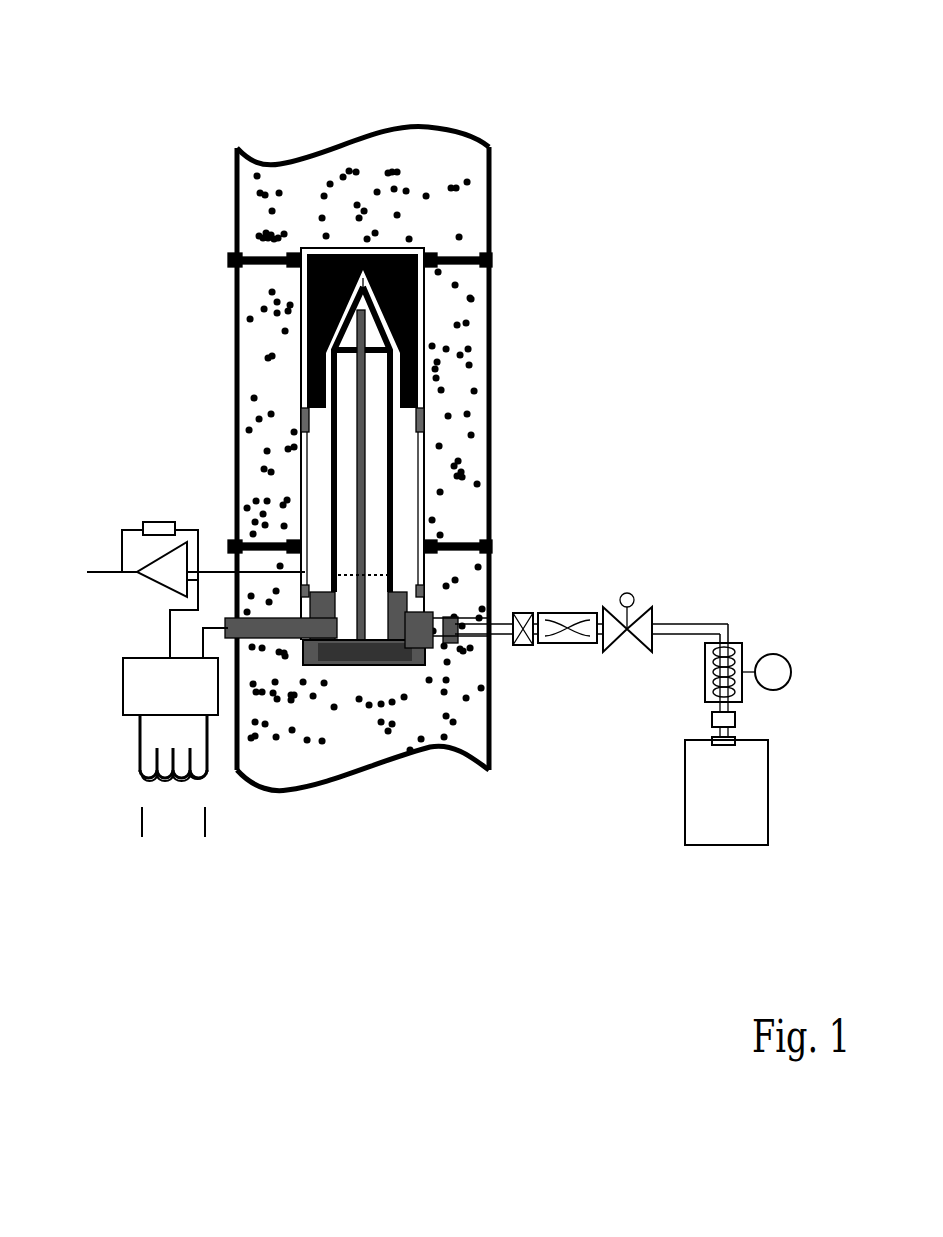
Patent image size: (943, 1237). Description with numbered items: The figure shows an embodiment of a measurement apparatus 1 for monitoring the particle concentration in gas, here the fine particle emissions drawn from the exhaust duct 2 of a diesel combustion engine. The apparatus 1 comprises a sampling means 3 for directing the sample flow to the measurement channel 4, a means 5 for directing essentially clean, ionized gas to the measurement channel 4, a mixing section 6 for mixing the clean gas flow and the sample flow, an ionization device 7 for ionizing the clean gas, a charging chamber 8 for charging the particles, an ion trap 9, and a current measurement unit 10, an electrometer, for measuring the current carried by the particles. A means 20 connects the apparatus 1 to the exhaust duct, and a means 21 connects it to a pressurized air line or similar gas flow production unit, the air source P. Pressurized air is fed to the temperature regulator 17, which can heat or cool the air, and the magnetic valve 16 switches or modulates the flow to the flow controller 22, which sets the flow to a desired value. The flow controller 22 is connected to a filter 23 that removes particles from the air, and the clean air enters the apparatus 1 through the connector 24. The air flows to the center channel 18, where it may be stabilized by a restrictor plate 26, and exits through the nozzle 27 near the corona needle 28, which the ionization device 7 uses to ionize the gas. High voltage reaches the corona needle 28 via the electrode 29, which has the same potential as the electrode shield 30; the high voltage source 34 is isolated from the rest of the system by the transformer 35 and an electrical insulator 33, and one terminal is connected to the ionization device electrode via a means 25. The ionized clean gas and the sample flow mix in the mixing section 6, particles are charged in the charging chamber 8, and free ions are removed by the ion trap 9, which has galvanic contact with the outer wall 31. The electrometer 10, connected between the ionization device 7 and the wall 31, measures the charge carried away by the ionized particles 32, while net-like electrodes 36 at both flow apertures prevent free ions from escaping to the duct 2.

The measurement apparatus 1 is at (372, 242).
The duct 2 is at (502, 208).
The sampling means 3 is at (422, 385).
The measurement channel 4 is at (413, 517).
The means for directing clean ionized gas 5 is at (492, 260).
The mixing section 6 is at (300, 407).
The ionization device 7 is at (360, 247).
The charging chamber 8 is at (435, 412).
The ion trap 9 is at (418, 568).
The current measurement unit 10 is at (125, 507).
The magnetic valve 16 is at (627, 652).
The temperature regulator 17 is at (742, 643).
The center channel 18 is at (347, 523).
The means for connecting the apparatus to the exhaust duct 20 is at (260, 250).
The means for connecting to a pressurized air line 21 is at (703, 722).
The flow controller 22 is at (560, 652).
The filter 23 is at (523, 612).
The connector 24 is at (502, 615).
The connecting means 25 is at (348, 663).
The restrictor plate 26 is at (390, 663).
The nozzle 27 is at (388, 247).
The corona needle 28 is at (300, 283).
The electrode 29 is at (396, 348).
The electrode shield 30 is at (413, 485).
The outer wall 31 is at (303, 488).
The ionized particles 32 is at (262, 612).
The electrical insulator 33 is at (373, 663).
The high voltage source 34 is at (118, 687).
The transformer 35 is at (125, 788).
The net-like electrodes 36 is at (418, 428).